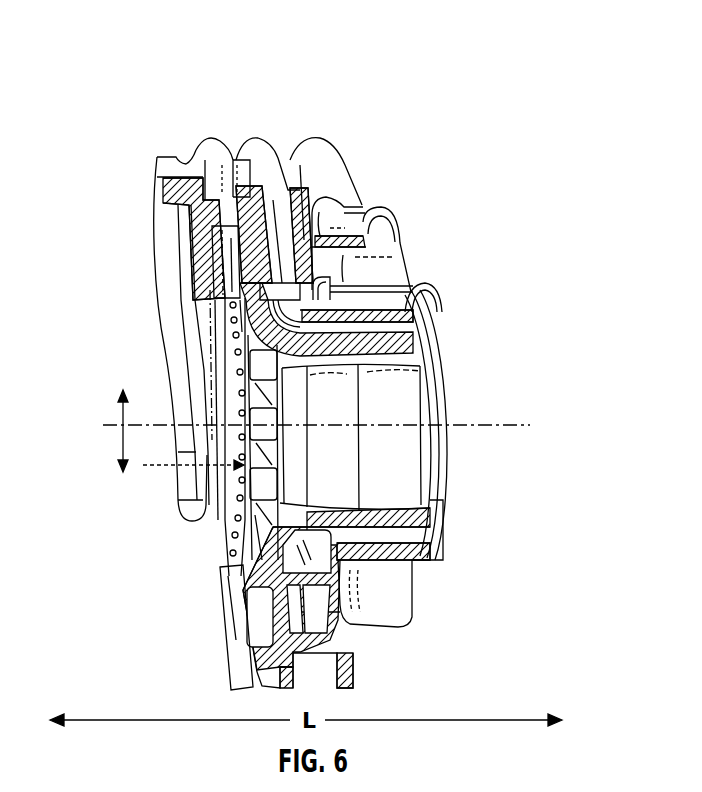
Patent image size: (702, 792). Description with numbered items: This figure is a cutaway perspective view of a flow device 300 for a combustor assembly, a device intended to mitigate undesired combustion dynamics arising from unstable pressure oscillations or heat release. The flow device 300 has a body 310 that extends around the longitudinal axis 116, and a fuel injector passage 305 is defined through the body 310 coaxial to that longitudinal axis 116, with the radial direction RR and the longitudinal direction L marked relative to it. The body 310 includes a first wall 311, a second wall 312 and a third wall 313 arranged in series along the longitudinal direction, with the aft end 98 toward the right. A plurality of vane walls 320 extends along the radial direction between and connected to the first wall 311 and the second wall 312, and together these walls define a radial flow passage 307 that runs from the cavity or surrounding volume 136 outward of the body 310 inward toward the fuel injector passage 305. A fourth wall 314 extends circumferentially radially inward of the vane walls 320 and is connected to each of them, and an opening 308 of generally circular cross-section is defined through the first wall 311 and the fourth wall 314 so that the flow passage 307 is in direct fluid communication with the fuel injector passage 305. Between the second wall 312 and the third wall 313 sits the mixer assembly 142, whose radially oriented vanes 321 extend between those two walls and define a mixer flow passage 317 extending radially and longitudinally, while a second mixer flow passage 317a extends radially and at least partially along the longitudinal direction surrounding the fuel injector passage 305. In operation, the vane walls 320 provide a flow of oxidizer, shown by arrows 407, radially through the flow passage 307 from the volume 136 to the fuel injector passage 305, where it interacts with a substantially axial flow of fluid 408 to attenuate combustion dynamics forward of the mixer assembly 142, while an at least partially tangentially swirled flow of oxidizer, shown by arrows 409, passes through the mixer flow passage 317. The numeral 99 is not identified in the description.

The surrounding volume 136 is at (210, 71).
The body 310 is at (231, 80).
The first wall 311 is at (203, 144).
The vane walls 320 is at (223, 162).
The second wall 312 is at (240, 178).
The radially oriented vanes 321 is at (288, 163).
The mixer flow passage 317 is at (319, 125).
The third wall 313 is at (334, 162).
The flow device 300 is at (380, 73).
The second mixer flow passage 317a is at (421, 314).
The fuel injector passage 305 is at (412, 391).
The aft end 98 is at (542, 418).
The longitudinal axis 116 is at (488, 430).
The forward direction 99 is at (97, 422).
The flow passage 307 is at (238, 280).
The opening 308 is at (232, 334).
The swirled flow of oxidizer 409 is at (267, 487).
The axial flow of fluid 408 is at (157, 468).
The fourth wall 314 is at (227, 521).
The flow of fluid 407 is at (232, 533).
The mixer assembly 142 is at (261, 695).